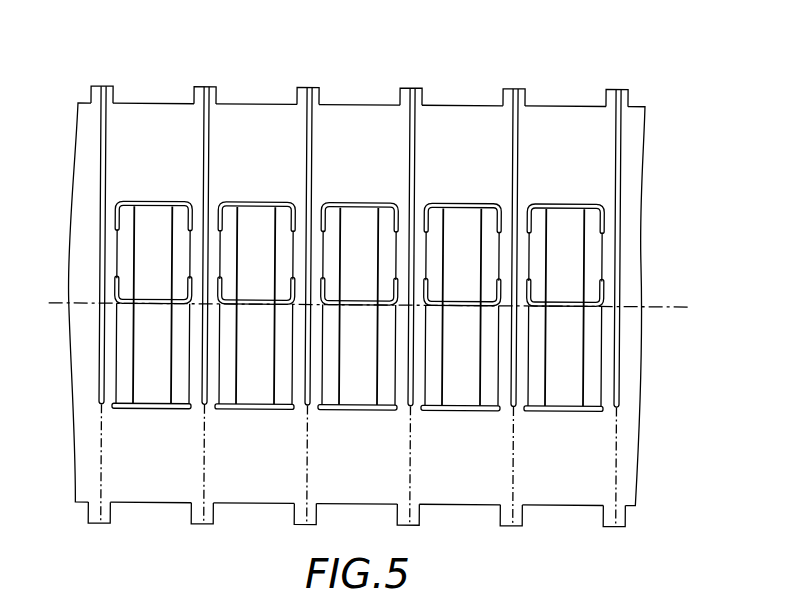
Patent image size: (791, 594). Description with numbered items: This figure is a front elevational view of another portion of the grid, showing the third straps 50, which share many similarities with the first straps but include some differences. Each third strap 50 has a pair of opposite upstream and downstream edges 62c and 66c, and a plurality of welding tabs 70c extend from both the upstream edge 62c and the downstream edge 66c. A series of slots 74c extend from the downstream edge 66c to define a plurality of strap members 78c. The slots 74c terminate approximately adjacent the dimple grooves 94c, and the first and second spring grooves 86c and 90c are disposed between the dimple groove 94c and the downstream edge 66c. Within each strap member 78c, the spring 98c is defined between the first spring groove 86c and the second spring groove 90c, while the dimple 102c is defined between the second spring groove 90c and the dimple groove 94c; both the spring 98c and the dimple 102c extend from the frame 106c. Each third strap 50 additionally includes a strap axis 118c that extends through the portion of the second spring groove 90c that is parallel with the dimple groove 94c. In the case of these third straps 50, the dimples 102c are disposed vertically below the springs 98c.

The third strap 50 is at (477, 93).
The upstream edge 62c is at (148, 503).
The downstream edge 66c is at (132, 101).
The welding tabs 70c is at (91, 88).
The slots 74c is at (101, 85).
The strap members 78c is at (146, 90).
The first spring groove 86c is at (122, 185).
The second spring groove 90c is at (150, 318).
The dimple groove 94c is at (138, 409).
The spring 98c is at (153, 186).
The dimple 102c is at (160, 420).
The frame 106c is at (170, 90).
The strap axis 118c is at (678, 307).